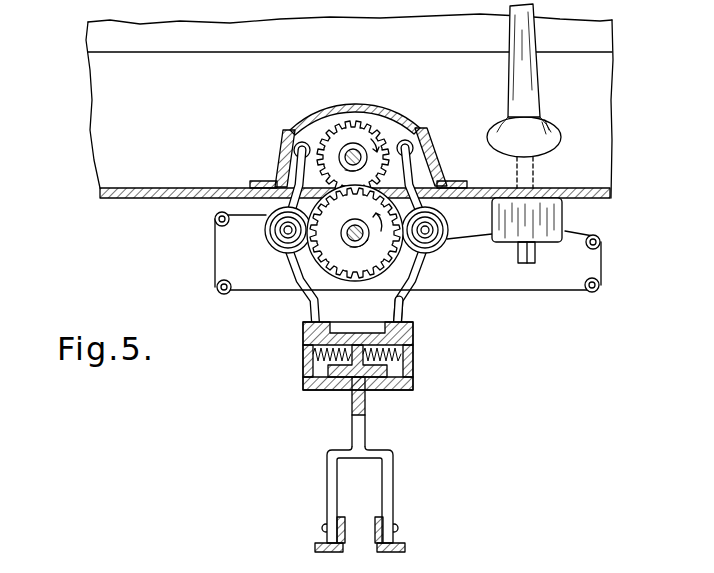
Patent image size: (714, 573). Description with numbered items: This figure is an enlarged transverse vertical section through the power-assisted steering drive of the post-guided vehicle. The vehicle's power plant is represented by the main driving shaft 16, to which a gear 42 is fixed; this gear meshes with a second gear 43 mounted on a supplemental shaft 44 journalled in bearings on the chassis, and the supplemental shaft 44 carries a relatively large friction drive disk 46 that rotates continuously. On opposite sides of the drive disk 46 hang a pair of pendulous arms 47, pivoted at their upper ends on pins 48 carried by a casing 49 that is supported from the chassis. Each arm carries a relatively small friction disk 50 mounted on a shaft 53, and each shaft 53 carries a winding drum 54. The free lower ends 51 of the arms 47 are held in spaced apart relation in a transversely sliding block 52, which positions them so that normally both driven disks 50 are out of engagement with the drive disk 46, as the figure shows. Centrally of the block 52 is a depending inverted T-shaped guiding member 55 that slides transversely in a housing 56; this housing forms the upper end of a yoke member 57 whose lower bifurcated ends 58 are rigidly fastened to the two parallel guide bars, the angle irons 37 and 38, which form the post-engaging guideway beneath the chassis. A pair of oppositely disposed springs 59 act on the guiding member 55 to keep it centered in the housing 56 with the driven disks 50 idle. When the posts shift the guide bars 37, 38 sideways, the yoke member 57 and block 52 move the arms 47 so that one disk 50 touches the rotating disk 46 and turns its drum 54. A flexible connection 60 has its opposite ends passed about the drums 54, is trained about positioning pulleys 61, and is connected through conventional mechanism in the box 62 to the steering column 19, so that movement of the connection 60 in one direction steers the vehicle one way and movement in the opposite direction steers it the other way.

The main driving shaft 16 is at (351, 155).
The steering column 19 is at (522, 256).
The angle iron 37 is at (333, 553).
The angle iron 38 is at (395, 553).
The gear 42 is at (360, 132).
The second gear 43 is at (355, 233).
The supplemental shaft 44 is at (358, 240).
The friction drive disk 46 is at (357, 282).
The pendulous arms 47 is at (420, 268).
The pins 48 is at (296, 142).
The casing 49 is at (280, 152).
The friction disk 50 is at (298, 250).
The free lower ends 51 is at (402, 322).
The sliding block 52 is at (380, 333).
The shaft 53 is at (286, 234).
The winding drum 54 is at (267, 225).
The guiding member 55 is at (345, 386).
The housing 56 is at (414, 386).
The yoke member 57 is at (367, 425).
The bifurcated ends 58 is at (394, 485).
The springs 59 is at (414, 364).
The flexible connection 60 is at (498, 291).
The positioning pulleys 61 is at (222, 296).
The box 62 is at (548, 224).